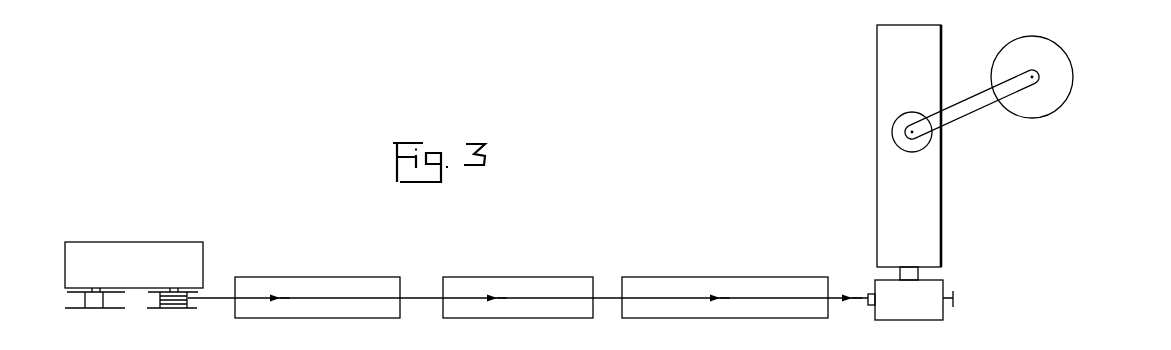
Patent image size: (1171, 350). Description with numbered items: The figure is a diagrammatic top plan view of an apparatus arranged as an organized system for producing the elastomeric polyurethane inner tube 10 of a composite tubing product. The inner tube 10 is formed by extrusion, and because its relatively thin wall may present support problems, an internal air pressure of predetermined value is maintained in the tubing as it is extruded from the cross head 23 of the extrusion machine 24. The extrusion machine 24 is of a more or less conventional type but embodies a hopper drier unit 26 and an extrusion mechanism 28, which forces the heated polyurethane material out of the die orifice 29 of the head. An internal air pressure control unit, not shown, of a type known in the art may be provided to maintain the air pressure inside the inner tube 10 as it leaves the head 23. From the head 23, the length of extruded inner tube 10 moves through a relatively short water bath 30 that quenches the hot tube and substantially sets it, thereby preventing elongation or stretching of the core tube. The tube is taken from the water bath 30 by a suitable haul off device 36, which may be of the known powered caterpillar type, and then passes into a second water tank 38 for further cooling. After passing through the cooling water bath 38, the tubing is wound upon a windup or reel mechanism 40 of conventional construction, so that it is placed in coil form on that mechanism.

The inner tube 10 is at (838, 296).
The cross head 23 is at (912, 313).
The extrusion machine 24 is at (948, 216).
The hopper drier unit 26 is at (1083, 76).
The extrusion mechanism 28 is at (887, 197).
The die orifice 29 is at (869, 306).
The water bath 30 is at (672, 277).
The haul off device 36 is at (513, 273).
The second water tank 38 is at (323, 275).
The windup or reel mechanism 40 is at (159, 235).